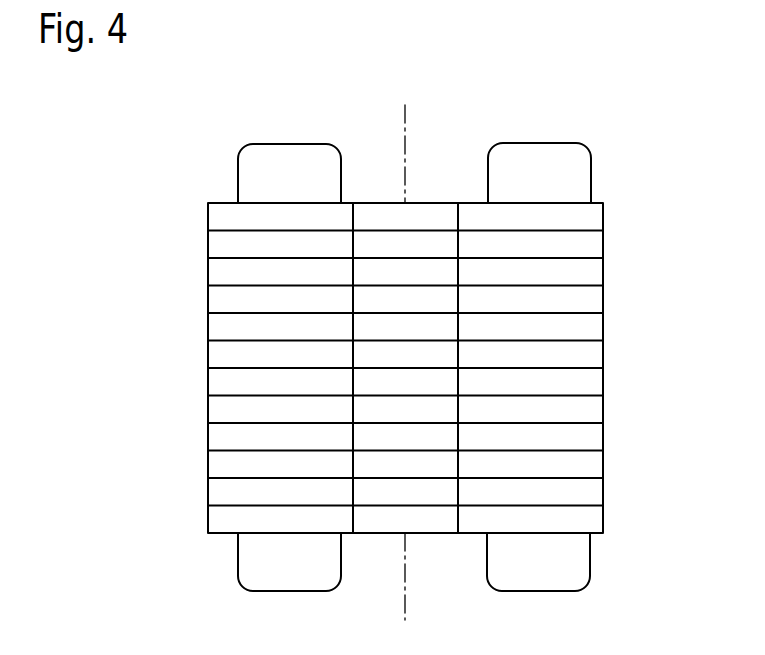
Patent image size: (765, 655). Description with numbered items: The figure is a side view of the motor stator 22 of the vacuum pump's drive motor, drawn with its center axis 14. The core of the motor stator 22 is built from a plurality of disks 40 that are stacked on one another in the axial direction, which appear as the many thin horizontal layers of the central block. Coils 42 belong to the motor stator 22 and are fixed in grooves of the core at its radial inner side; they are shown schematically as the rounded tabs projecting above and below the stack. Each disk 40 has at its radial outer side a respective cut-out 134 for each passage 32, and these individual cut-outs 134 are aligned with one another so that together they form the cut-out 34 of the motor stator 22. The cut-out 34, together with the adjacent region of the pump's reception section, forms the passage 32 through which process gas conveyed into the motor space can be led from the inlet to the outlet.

The center axis 14 is at (405, 111).
The motor stator 22 is at (130, 197).
The passage 32 is at (419, 212).
The cut-out 34 is at (402, 353).
The disks 40 is at (223, 263).
The coils 42 is at (260, 157).
The cut-out 134 is at (444, 216).